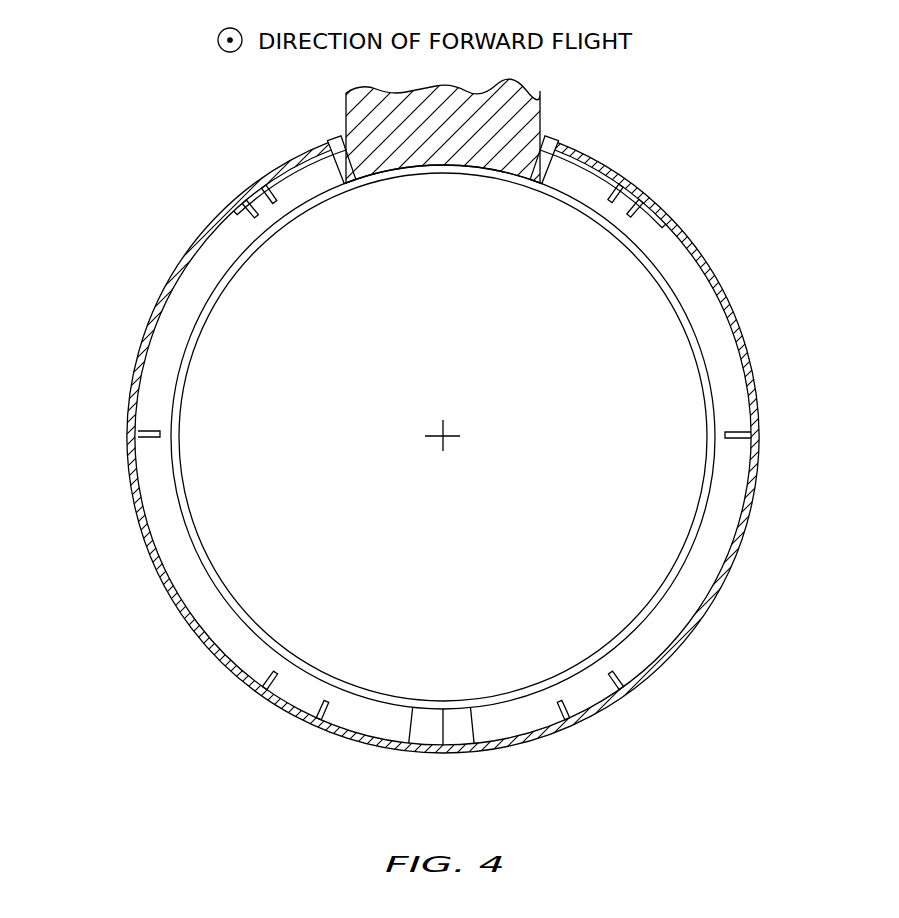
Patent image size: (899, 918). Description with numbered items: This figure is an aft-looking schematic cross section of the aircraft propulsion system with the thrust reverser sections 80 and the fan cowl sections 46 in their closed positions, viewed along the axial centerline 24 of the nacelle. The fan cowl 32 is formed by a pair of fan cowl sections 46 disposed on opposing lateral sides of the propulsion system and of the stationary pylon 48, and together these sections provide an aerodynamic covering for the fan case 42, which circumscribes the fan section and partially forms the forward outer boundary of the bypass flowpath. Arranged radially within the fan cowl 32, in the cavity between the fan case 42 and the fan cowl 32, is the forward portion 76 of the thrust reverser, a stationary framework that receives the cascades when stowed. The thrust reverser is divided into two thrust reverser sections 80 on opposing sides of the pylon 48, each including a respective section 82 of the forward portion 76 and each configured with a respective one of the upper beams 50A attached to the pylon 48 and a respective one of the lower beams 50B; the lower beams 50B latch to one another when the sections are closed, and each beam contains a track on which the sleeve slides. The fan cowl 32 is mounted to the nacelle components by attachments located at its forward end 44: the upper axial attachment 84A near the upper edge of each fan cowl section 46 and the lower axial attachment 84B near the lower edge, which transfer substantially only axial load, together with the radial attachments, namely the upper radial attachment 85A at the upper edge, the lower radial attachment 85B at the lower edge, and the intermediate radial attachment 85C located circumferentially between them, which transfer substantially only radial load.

The axial centerline 24 is at (447, 440).
The fan cowl 32 is at (475, 448).
The fan case 42 is at (453, 437).
The forward end of the fan cowl 44 is at (198, 240).
The fan cowl sections 46 is at (737, 309).
The pylon 48 is at (545, 106).
The upper beams 50A is at (343, 192).
The lower beams 50B is at (423, 742).
The forward portion of the thrust reverser 76 is at (199, 549).
The thrust reverser sections 80 is at (441, 437).
The section of the forward portion 82 is at (441, 437).
The upper axial attachment 84A is at (232, 204).
The lower axial attachment 84B is at (272, 712).
The upper radial attachment 85A is at (279, 182).
The lower radial attachment 85B is at (336, 728).
The intermediate radial attachment 85C is at (140, 441).